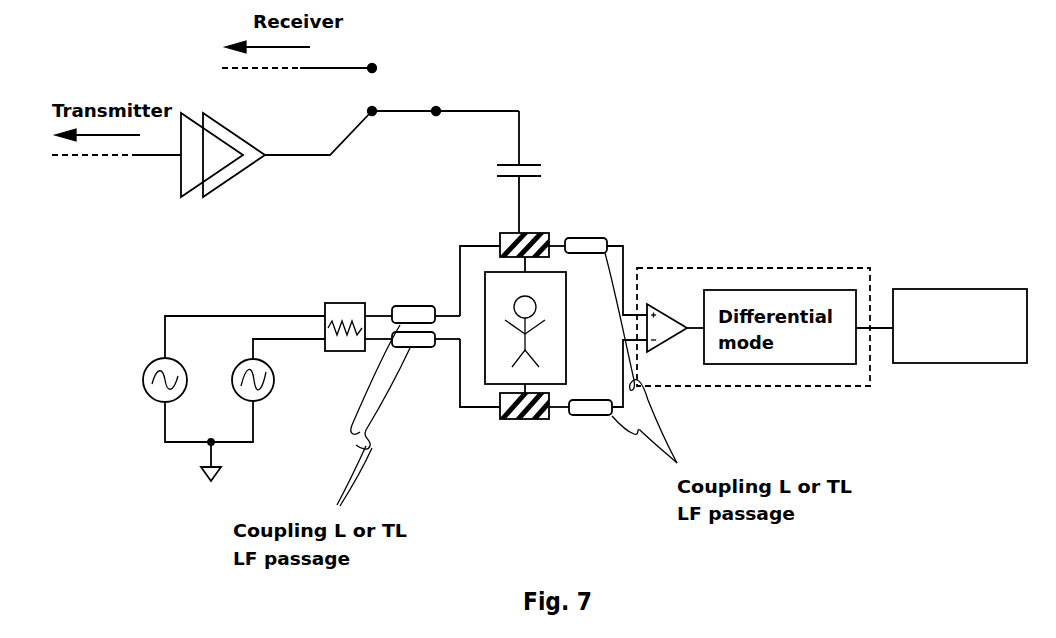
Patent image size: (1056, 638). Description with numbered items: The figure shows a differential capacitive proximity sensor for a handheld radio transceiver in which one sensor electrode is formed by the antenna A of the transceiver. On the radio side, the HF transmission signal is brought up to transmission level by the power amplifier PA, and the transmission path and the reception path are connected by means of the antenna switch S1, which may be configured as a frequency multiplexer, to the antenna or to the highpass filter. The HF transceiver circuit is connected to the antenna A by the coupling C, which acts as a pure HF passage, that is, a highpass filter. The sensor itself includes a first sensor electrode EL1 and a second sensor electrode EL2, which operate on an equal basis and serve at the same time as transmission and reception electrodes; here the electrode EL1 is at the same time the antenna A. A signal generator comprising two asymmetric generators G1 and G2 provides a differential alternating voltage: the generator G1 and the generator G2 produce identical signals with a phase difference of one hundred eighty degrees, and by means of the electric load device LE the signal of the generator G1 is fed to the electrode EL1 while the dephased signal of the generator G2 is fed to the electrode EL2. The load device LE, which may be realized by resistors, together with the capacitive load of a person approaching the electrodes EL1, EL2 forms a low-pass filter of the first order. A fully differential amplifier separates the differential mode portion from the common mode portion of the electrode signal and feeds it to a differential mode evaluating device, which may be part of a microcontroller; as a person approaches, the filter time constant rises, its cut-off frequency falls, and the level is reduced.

The power amplifier PA is at (276, 154).
The antenna switch S1 is at (444, 105).
The coupling C is at (540, 148).
The first sensor electrode EL1 is at (553, 233).
The second sensor electrode EL2 is at (527, 423).
The electric load device LE is at (323, 296).
The first generator G1 is at (138, 378).
The second generator G2 is at (227, 393).
The antenna A is at (675, 317).